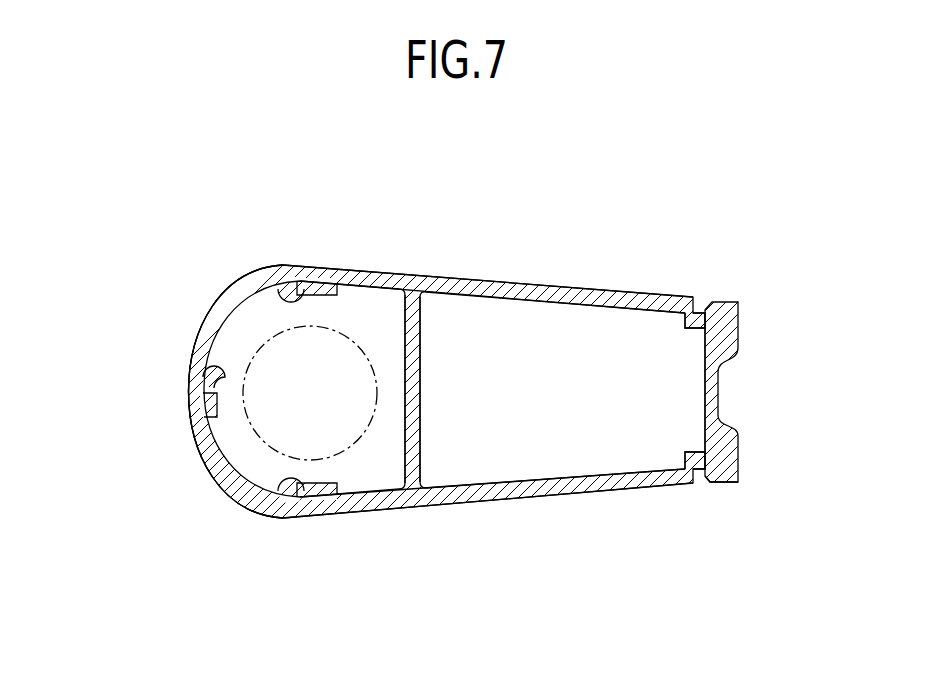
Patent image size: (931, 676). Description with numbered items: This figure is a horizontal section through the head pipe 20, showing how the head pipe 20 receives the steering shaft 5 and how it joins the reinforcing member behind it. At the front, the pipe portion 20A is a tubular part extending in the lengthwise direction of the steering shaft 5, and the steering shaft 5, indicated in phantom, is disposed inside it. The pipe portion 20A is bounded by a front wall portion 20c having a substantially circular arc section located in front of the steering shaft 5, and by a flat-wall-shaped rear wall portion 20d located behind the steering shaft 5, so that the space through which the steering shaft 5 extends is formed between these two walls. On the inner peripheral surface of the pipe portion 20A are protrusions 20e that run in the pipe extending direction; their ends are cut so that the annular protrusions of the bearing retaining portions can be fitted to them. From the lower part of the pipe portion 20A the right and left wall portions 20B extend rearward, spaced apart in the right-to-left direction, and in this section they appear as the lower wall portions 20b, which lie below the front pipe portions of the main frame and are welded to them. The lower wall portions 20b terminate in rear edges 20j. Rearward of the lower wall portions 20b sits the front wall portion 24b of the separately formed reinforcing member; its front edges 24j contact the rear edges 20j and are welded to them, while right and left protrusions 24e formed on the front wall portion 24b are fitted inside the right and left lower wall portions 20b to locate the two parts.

The head pipe 20 is at (341, 220).
The steering shaft 5 is at (263, 346).
The pipe portion 20A is at (191, 326).
The wall portions 20B is at (569, 281).
The lower wall portion 20b is at (488, 278).
The front wall portion 20c is at (195, 448).
The rear wall portion 20d is at (421, 388).
The protrusion 20e is at (273, 285).
The rear edges 20j is at (704, 297).
The front wall portion 24b is at (719, 383).
The protrusions 24e is at (688, 338).
The front edges 24j is at (711, 484).